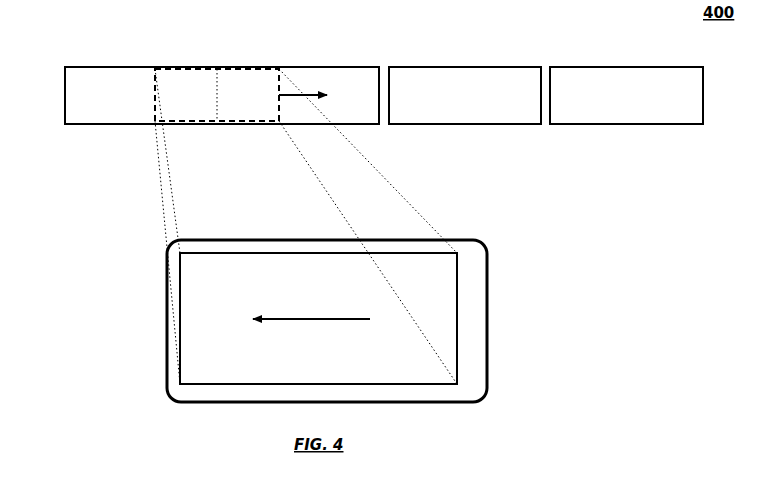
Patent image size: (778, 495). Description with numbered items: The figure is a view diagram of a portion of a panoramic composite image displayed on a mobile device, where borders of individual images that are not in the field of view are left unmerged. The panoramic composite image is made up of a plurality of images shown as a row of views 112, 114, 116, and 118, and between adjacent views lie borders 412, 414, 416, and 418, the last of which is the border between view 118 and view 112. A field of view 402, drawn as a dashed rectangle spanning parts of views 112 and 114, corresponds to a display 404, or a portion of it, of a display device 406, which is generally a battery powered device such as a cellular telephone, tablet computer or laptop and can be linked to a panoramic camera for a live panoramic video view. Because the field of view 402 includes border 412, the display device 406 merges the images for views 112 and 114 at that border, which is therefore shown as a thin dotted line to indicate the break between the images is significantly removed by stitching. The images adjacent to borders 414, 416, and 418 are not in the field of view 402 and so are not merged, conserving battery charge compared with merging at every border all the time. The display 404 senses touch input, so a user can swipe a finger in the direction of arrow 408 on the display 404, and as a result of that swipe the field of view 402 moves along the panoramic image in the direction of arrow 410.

The view 112 is at (222, 95).
The view 114 is at (337, 66).
The view 116 is at (465, 95).
The view 118 is at (626, 95).
The field of view 402 is at (262, 124).
The display 404 is at (250, 253).
The display device 406 is at (487, 363).
The arrow 408 is at (312, 319).
The arrow 410 is at (308, 95).
The border 412 is at (217, 66).
The border 414 is at (383, 66).
The border 416 is at (545, 126).
The border 418 is at (65, 66).